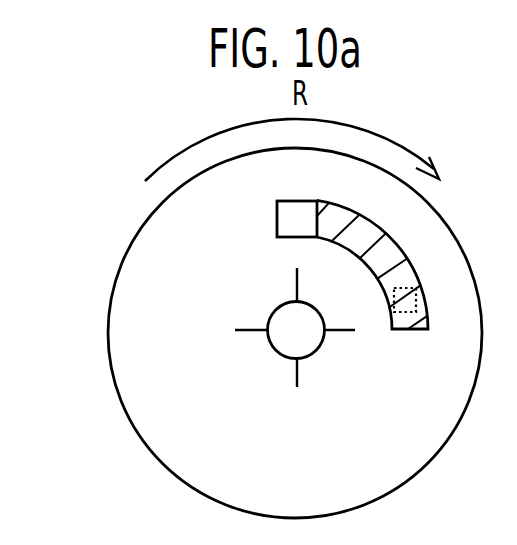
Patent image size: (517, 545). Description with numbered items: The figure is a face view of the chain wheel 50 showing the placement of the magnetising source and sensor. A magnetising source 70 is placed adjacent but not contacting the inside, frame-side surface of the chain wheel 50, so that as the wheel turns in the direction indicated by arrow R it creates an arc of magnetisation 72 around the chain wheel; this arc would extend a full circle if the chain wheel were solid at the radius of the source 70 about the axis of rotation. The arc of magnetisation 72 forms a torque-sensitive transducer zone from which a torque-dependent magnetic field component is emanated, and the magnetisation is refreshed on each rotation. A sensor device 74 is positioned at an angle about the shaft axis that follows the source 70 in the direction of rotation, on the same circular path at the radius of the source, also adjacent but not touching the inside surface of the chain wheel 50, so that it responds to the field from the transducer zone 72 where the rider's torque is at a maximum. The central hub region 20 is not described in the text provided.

The hub 20 is at (272, 348).
The chain wheel 50 is at (127, 299).
The magnetising source 70 is at (277, 218).
The arc of magnetisation 72 is at (387, 254).
The sensor device 74 is at (403, 316).